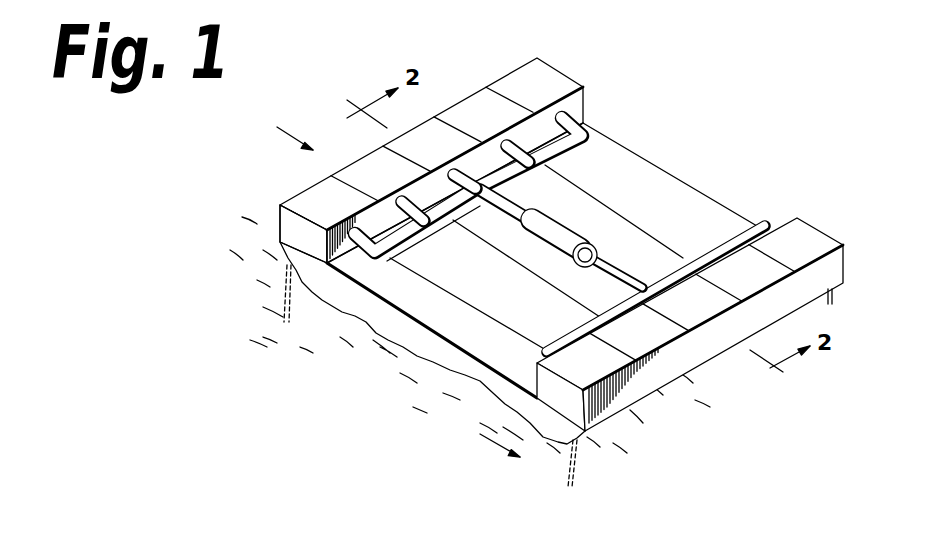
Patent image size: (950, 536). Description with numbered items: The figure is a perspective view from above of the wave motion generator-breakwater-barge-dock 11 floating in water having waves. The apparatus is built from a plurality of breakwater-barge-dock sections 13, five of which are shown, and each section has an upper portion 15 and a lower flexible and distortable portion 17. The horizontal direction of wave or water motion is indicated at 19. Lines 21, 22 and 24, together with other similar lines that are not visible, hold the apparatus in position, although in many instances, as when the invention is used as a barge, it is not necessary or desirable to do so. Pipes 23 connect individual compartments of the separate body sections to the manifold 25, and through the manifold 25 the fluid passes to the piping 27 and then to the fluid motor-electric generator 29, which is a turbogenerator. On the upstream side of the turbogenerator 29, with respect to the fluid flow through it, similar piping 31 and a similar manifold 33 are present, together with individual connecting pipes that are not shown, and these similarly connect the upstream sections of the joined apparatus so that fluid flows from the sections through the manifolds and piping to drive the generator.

The wave motion generator-breakwater-barge-dock 11 is at (337, 167).
The breakwater-barge-dock sections 13 is at (300, 190).
The upper portion 15 is at (476, 106).
The lower flexible and distortable portion 17 is at (313, 277).
The horizontal direction of wave or water motion 19 is at (490, 444).
The line 21 is at (283, 304).
The line 22 is at (580, 470).
The pipes 23 is at (510, 140).
The line 24 is at (834, 301).
The manifold 25 is at (526, 179).
The piping 27 is at (538, 214).
The fluid motor-electric generator 29 is at (580, 241).
The piping 31 is at (617, 270).
The manifold 33 is at (682, 270).